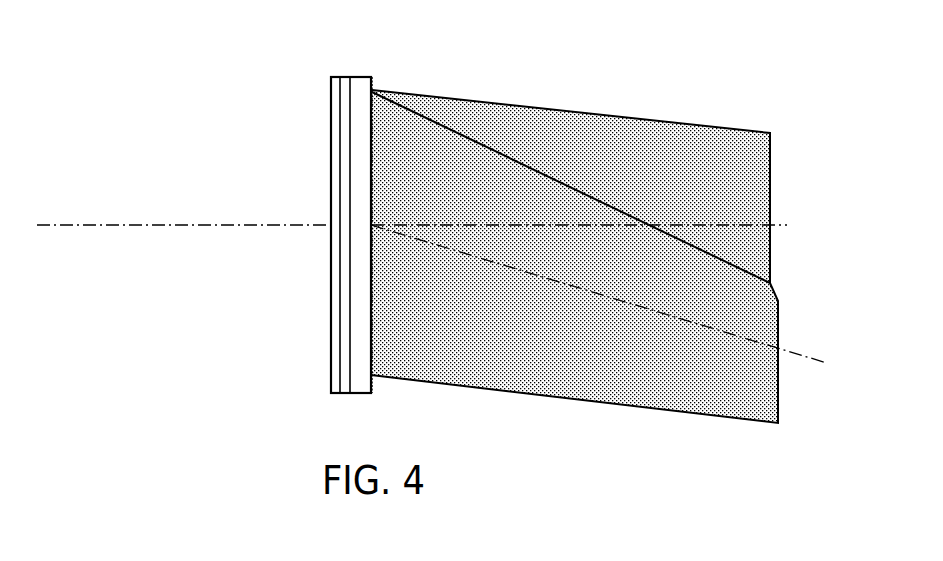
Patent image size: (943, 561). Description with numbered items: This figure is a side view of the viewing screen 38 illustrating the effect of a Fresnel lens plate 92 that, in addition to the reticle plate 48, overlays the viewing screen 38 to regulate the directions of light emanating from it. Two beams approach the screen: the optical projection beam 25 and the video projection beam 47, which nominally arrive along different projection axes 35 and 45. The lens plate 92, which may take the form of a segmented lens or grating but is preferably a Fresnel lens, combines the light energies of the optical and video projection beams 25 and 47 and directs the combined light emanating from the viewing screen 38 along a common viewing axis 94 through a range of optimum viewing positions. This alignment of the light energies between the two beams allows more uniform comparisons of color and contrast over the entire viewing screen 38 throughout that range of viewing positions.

The optical projection beam 25 is at (571, 178).
The projection axis 35 is at (777, 225).
The viewing screen 38 is at (372, 84).
The projection axis 45 is at (800, 357).
The video projection beam 47 is at (521, 399).
The reticle plate 48 is at (346, 77).
The lens plate 92 is at (331, 383).
The common viewing axis 94 is at (80, 225).